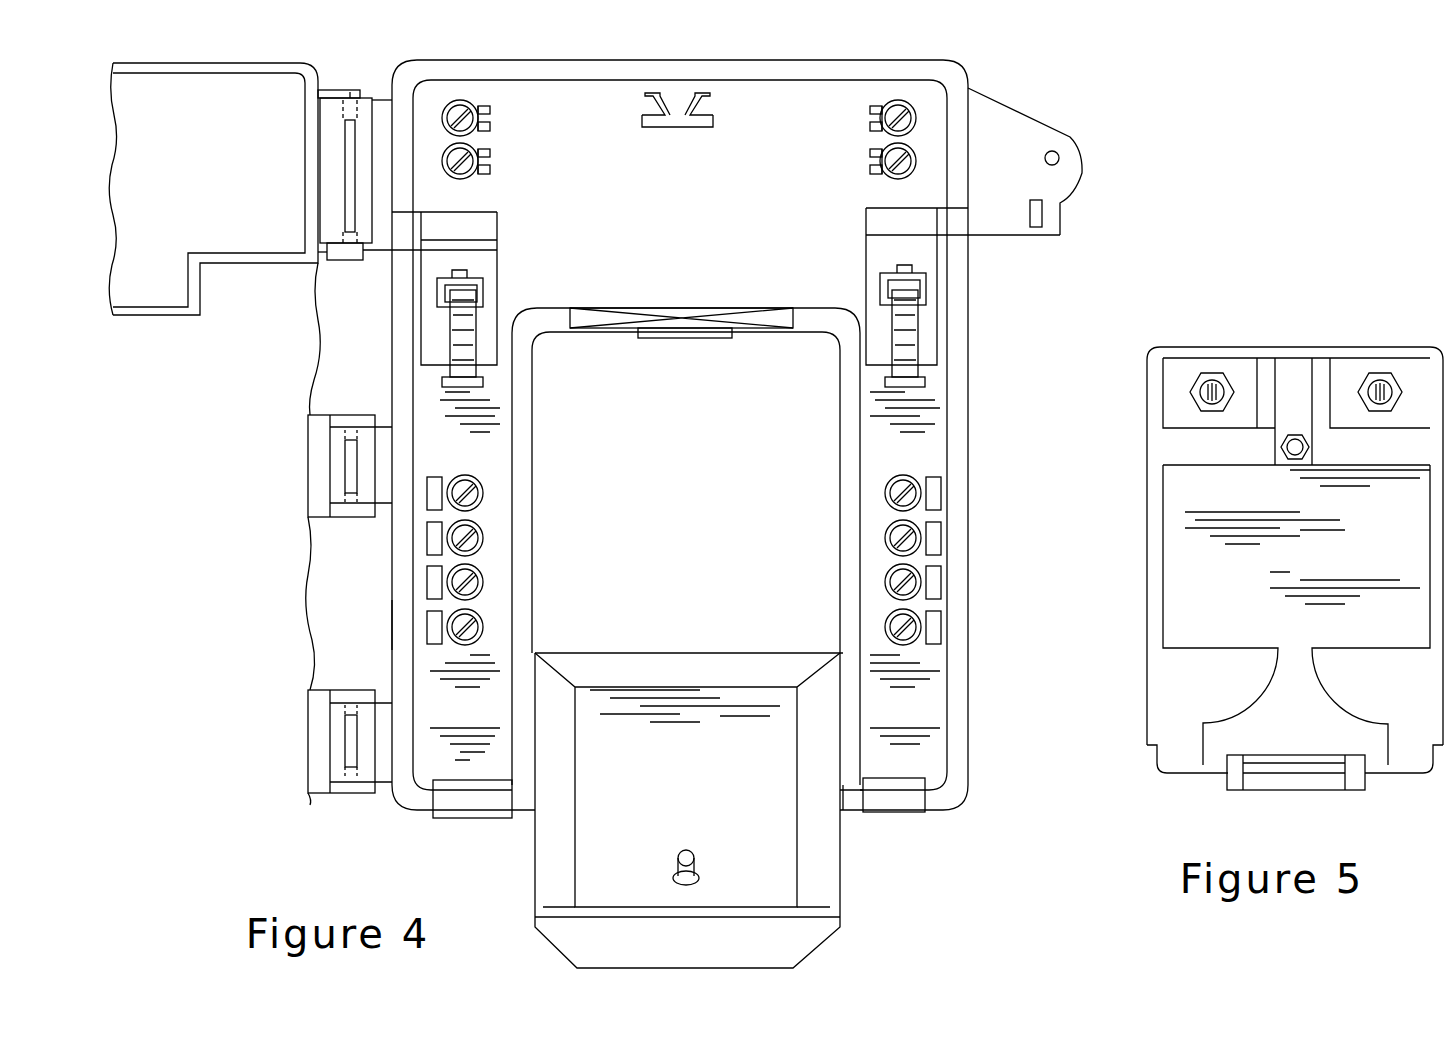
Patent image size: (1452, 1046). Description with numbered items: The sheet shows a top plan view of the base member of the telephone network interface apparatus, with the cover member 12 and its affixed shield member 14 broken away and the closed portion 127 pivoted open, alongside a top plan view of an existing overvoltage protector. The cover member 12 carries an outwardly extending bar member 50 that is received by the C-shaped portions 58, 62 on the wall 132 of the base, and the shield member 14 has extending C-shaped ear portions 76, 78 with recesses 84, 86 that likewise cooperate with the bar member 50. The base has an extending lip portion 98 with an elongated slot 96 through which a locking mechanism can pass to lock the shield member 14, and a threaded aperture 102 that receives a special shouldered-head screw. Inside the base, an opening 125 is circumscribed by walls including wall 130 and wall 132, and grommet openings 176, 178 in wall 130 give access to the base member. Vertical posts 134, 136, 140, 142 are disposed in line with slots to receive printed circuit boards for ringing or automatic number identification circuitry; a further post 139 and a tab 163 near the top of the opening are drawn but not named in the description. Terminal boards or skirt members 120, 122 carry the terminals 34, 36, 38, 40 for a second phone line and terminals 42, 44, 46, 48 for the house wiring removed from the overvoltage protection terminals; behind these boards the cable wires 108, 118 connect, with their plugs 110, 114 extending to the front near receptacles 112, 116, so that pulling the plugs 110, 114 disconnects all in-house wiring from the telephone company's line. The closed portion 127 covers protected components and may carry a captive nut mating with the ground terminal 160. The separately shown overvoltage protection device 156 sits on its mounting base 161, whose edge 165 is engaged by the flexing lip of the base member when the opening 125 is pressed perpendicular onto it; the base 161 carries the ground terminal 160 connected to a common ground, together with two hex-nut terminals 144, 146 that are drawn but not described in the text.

In FIG. 4, the cover member 12 is at (318, 355).
In FIG. 4, the shield member 14 is at (222, 170).
In FIG. 4, the terminal 34 is at (483, 492).
In FIG. 4, the terminal 36 is at (483, 538).
In FIG. 4, the terminal 38 is at (483, 583).
In FIG. 4, the terminal 40 is at (483, 627).
In FIG. 4, the terminal 42 is at (885, 490).
In FIG. 4, the terminal 44 is at (885, 536).
In FIG. 4, the terminal 46 is at (885, 580).
In FIG. 4, the terminal 48 is at (885, 625).
In FIG. 4, the extending bar member 50 is at (345, 182).
In FIG. 4, the C-shaped portion 58 is at (327, 128).
In FIG. 4, the C-shaped portion 62 is at (342, 718).
In FIG. 4, the extending C-shaped portion 76 is at (352, 98).
In FIG. 4, the extending C-shaped portion 78 is at (330, 256).
In FIG. 4, the recess 84 is at (345, 98).
In FIG. 4, the recess 86 is at (350, 260).
In FIG. 4, the elongated slot 96 is at (1040, 218).
In FIG. 4, the extending lip portion 98 is at (1025, 133).
In FIG. 4, the threaded aperture 102 is at (1060, 158).
In FIG. 4, the cable wire 108 is at (455, 345).
In FIG. 4, the plug 110 is at (450, 298).
In FIG. 4, the receptacle 112 is at (470, 294).
In FIG. 4, the plug 114 is at (912, 278).
In FIG. 4, the receptacle 116 is at (882, 283).
In FIG. 4, the cable wire 118 is at (897, 315).
In FIG. 4, the terminal board 120 is at (497, 430).
In FIG. 4, the terminal board 122 is at (863, 430).
In FIG. 4, the opening 125 is at (838, 405).
In FIG. 4, the closed portion 127 is at (668, 817).
In FIG. 4, the wall 130 is at (852, 800).
In FIG. 4, the wall 132 is at (398, 627).
In FIG. 4, the vertical post 134 is at (449, 118).
In FIG. 4, the vertical post 136 is at (447, 160).
In FIG. 4, the adjustment screw 139 is at (880, 120).
In FIG. 4, the vertical post 140 is at (893, 163).
In FIG. 4, the vertical post 142 is at (706, 92).
In FIG. 5, the hex nut terminal 144 is at (1212, 385).
In FIG. 5, the hex nut terminal 146 is at (1380, 385).
In FIG. 5, the overvoltage protection device 156 is at (1345, 372).
In FIG. 5, the ground terminal 160 is at (1303, 447).
In FIG. 5, the base 161 is at (1403, 740).
In FIG. 4, the tab 163 is at (720, 340).
In FIG. 5, the edge 165 is at (1280, 350).
In FIG. 4, the grommet opening 176 is at (452, 800).
In FIG. 4, the grommet opening 178 is at (900, 790).